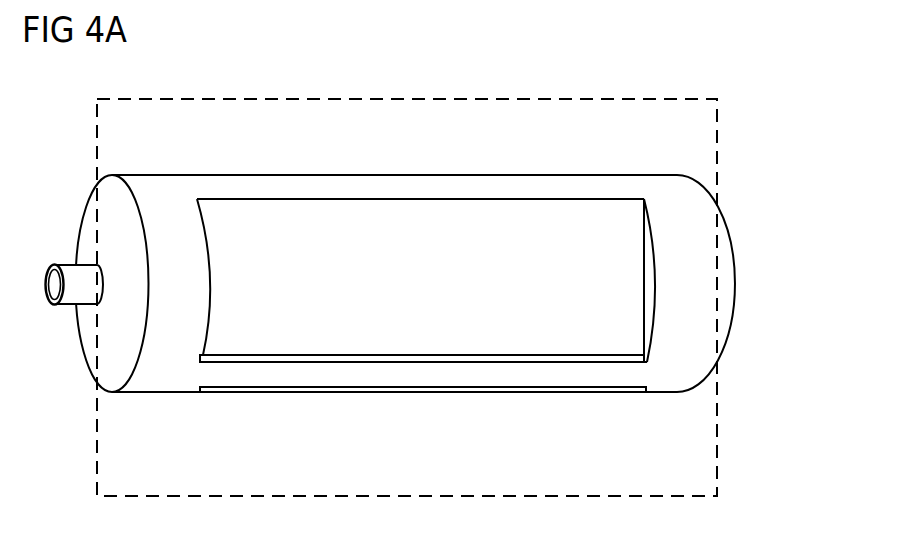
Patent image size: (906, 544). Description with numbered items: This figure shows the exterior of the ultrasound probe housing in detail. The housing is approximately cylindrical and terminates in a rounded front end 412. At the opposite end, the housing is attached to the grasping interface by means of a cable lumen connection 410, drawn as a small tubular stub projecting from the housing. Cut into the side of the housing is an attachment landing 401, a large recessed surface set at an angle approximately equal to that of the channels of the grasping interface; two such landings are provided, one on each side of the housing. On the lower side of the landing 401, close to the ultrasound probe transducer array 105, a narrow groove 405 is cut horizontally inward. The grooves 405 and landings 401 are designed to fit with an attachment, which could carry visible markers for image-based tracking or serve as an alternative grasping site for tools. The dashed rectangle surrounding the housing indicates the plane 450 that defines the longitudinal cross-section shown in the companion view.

The plane 450 is at (423, 282).
The rounded front end 412 is at (735, 280).
The cable lumen connection 410 is at (73, 263).
The attachment landing 401 is at (458, 198).
The narrow groove 405 is at (225, 362).
The ultrasound probe transducer array 105 is at (605, 393).